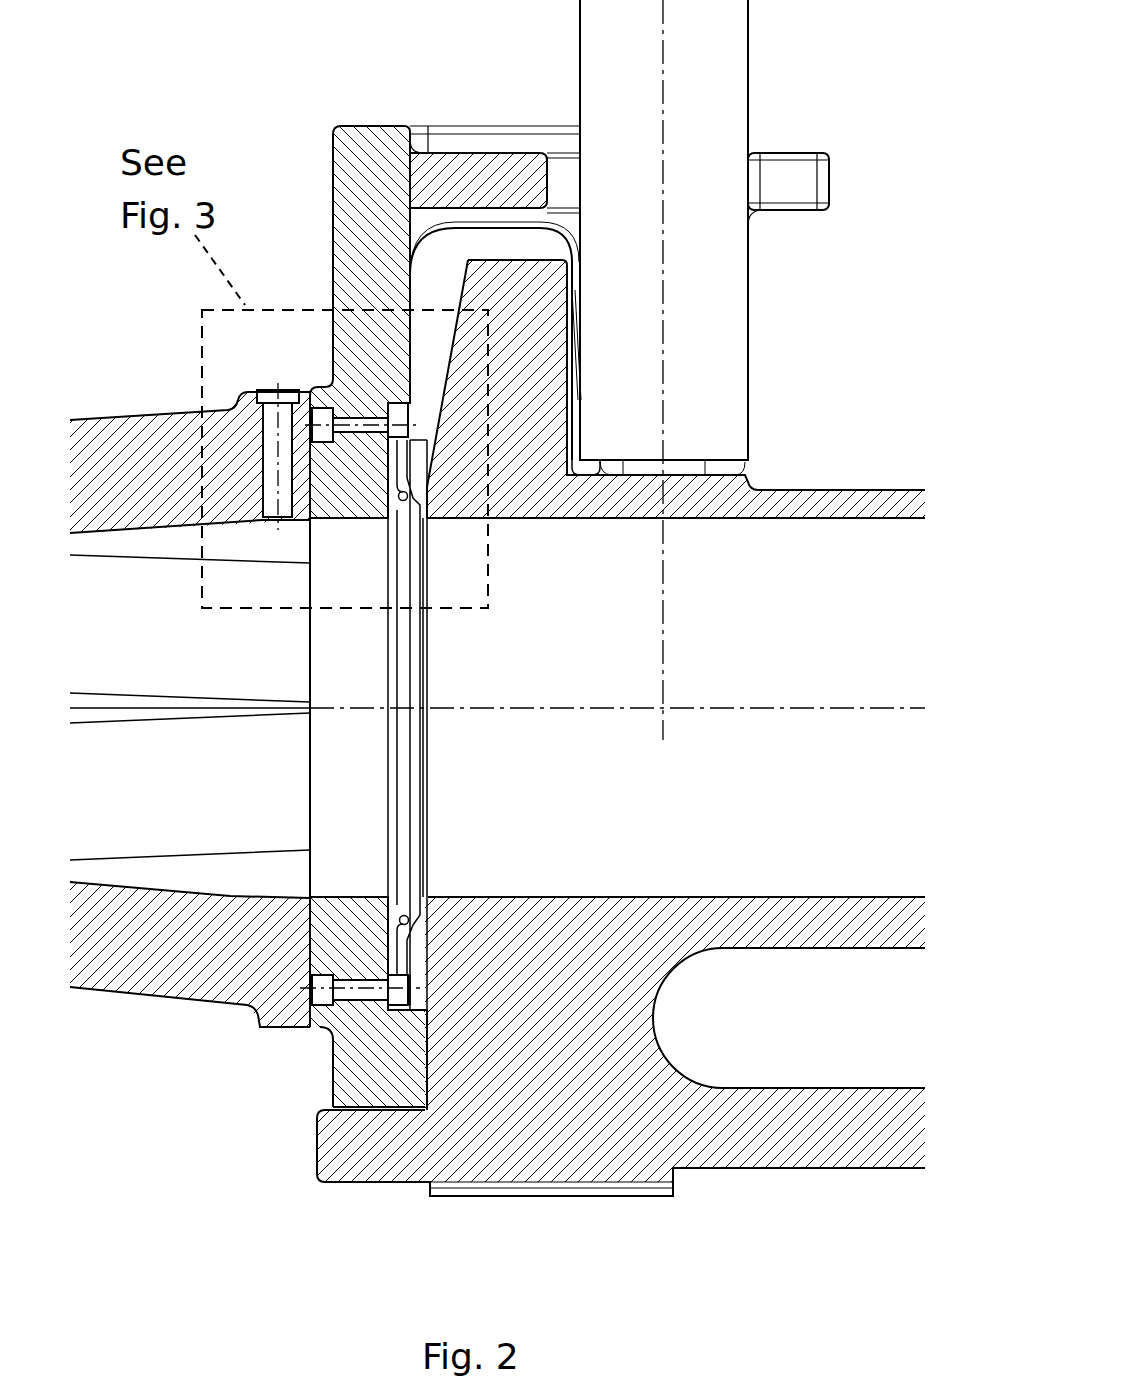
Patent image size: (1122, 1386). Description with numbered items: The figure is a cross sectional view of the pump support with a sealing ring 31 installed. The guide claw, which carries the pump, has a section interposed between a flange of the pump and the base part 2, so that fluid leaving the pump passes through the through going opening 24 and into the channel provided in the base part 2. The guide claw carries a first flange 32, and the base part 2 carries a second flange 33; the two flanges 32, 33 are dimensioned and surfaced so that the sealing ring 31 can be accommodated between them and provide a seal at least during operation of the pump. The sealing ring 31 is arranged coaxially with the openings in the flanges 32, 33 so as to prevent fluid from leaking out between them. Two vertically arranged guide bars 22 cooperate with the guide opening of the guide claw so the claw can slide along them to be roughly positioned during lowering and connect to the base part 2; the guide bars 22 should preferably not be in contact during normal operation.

The base part 2 is at (745, 1188).
The guide bars 22 is at (712, 296).
The through going opening 24 is at (337, 753).
The sealing ring 31 is at (397, 946).
The first flange 32 is at (364, 959).
The second flange 33 is at (452, 928).